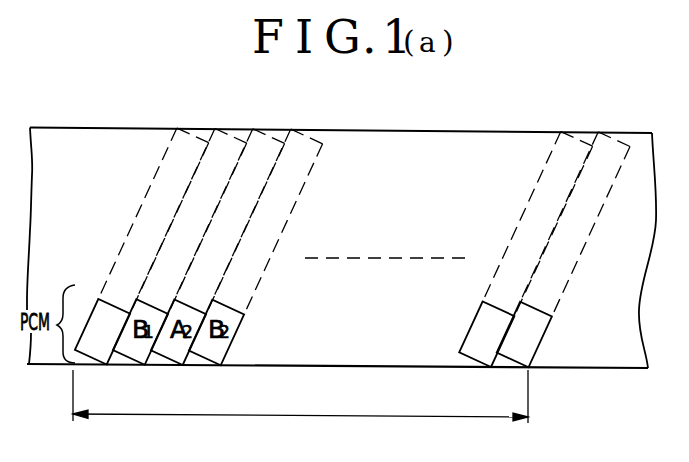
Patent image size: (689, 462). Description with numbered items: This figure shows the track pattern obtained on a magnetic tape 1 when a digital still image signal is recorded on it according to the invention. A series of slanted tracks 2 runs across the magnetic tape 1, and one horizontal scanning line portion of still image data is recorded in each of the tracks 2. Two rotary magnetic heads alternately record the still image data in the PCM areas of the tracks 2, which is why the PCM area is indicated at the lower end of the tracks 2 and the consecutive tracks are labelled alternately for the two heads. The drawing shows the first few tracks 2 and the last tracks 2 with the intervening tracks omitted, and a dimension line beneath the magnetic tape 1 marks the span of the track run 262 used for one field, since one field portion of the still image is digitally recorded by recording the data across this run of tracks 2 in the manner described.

The magnetic tape 1 is at (540, 133).
The tracks 2 is at (96, 296).
The 262 tracks span 262 is at (300, 396).